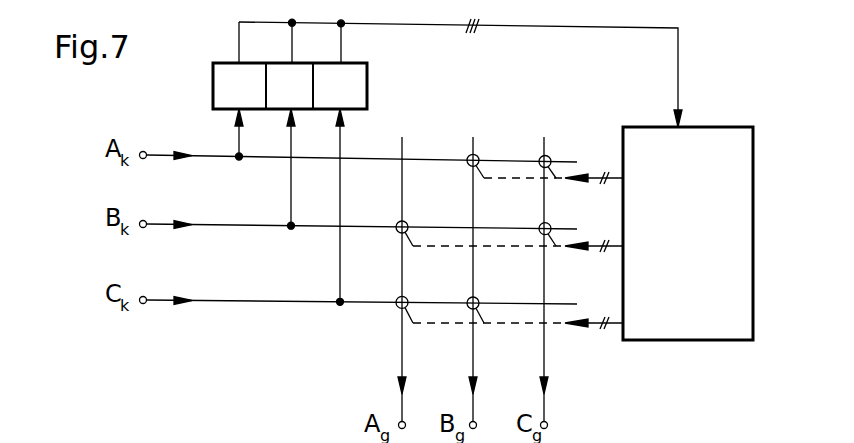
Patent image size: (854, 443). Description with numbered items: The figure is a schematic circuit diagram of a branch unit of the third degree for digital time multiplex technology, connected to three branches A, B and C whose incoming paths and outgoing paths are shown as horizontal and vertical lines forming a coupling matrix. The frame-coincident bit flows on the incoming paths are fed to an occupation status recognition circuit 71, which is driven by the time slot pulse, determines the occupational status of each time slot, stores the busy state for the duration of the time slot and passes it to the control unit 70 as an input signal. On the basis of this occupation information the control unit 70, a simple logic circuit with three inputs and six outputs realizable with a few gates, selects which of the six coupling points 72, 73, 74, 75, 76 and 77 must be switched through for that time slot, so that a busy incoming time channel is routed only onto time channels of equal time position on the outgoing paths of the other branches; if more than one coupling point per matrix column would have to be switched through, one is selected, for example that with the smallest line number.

The control unit 70 is at (583, 233).
The occupation status recognition circuit 71 is at (367, 63).
The coupling point 72 is at (485, 152).
The coupling point 73 is at (557, 152).
The coupling point 74 is at (414, 220).
The coupling point 75 is at (557, 220).
The coupling point 76 is at (414, 297).
The coupling point 77 is at (485, 297).